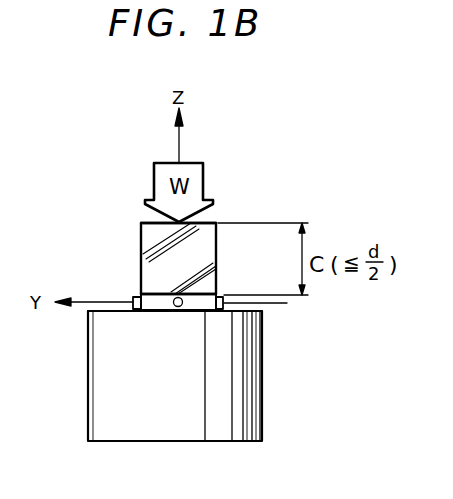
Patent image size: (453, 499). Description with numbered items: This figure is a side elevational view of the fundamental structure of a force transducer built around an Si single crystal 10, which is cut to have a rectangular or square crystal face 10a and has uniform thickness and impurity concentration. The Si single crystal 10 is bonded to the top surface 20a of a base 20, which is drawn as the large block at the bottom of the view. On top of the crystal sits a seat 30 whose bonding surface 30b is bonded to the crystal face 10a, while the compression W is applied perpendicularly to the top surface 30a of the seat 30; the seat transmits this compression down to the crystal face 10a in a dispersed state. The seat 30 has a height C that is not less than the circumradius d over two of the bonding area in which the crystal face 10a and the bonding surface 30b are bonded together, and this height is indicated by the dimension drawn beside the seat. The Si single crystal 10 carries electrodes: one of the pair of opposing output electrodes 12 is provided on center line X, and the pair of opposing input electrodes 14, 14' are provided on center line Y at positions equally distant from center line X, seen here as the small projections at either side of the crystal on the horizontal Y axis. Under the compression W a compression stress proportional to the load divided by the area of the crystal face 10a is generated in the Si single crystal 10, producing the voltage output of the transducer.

The Si single crystal 10 is at (194, 304).
The crystal face 10a is at (207, 294).
The output electrode 12 is at (176, 311).
The input electrode 14 is at (240, 290).
The input electrode 14' is at (111, 287).
The base 20 is at (262, 415).
The top surface of base 20a is at (263, 305).
The seat 30 is at (140, 243).
The top surface of seat 30a is at (148, 222).
The bonding surface of seat 30b is at (160, 294).